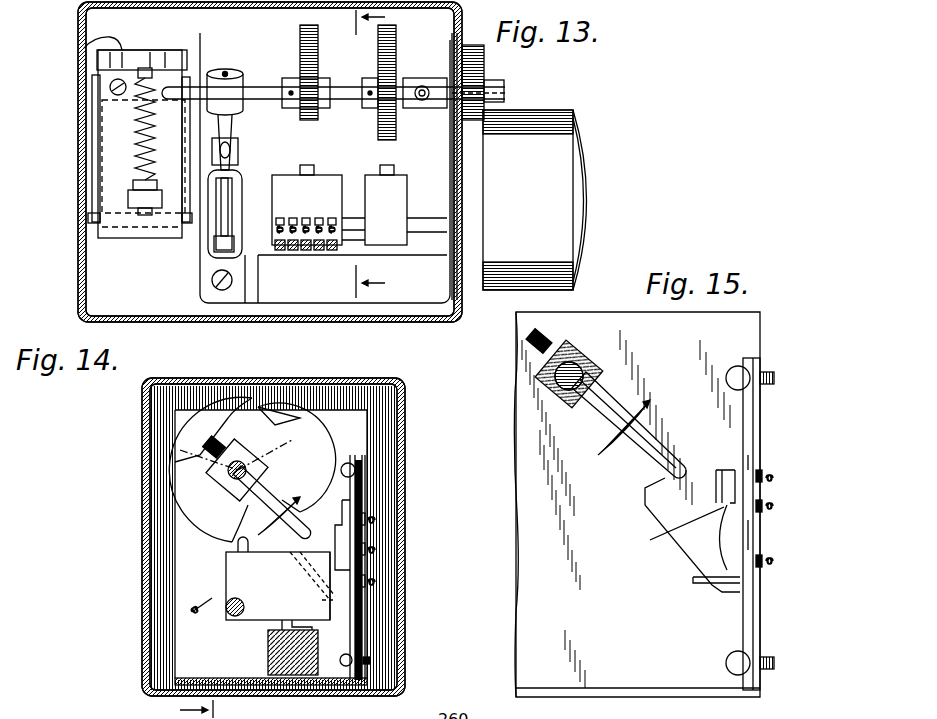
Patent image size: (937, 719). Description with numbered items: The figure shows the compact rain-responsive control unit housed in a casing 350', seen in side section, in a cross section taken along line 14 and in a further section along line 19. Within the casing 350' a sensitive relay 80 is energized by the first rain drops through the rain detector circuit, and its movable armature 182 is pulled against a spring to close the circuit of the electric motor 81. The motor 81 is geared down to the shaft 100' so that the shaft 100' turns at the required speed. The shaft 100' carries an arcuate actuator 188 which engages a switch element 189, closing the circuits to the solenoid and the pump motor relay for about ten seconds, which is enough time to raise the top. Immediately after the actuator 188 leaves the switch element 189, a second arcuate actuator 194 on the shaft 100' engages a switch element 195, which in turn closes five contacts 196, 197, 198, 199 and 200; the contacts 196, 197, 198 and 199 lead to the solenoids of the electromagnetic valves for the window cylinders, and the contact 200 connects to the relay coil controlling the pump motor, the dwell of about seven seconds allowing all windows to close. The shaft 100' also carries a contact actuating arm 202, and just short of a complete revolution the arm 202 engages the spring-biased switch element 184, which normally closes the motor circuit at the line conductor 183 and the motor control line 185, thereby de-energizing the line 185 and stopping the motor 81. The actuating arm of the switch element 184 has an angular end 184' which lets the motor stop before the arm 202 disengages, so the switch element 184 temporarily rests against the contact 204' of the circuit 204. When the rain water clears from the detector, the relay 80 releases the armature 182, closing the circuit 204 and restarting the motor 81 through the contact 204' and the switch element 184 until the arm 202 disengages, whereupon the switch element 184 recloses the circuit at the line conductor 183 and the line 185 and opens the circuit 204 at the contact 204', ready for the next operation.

In FIG. 13, the casing 350' is at (270, 177).
In FIG. 13, the sensitive relay 80 is at (95, 137).
In FIG. 13, the movable armature 182 is at (84, 50).
In FIG. 13, the contact actuating arm 202 is at (238, 118).
In FIG. 14, the contact actuating arm 202 is at (272, 510).
In FIG. 15, the contact actuating arm 202 is at (604, 414).
In FIG. 13, the switch element 184 is at (205, 220).
In FIG. 14, the switch element 184 is at (280, 520).
In FIG. 15, the switch element 184 is at (680, 548).
In FIG. 15, the angular end 184' is at (638, 489).
In FIG. 13, the arcuate actuator 194 is at (300, 36).
In FIG. 14, the arcuate actuator 194 is at (300, 436).
In FIG. 13, the arcuate actuator 188 is at (397, 30).
In FIG. 14, the arcuate actuator 188 is at (175, 462).
In FIG. 13, the shaft 100' is at (425, 76).
In FIG. 14, the shaft 100' is at (249, 468).
In FIG. 15, the shaft 100' is at (571, 364).
In FIG. 13, the section line 14 is at (356, 154).
In FIG. 13, the electric motor 81 is at (540, 190).
In FIG. 13, the switch element 195 is at (325, 170).
In FIG. 14, the switch element 195 is at (278, 593).
In FIG. 13, the contact 198 is at (313, 212).
In FIG. 13, the contact 200 is at (276, 220).
In FIG. 13, the contact 199 is at (293, 216).
In FIG. 13, the contact 197 is at (320, 216).
In FIG. 13, the contact 196 is at (336, 220).
In FIG. 14, the contact 196 is at (215, 610).
In FIG. 13, the switch element 189 is at (388, 182).
In FIG. 14, the circuit 204 is at (401, 509).
In FIG. 15, the circuit 204 is at (784, 472).
In FIG. 15, the contact 204' is at (706, 489).
In FIG. 14, the line conductor 183 is at (382, 551).
In FIG. 15, the line conductor 183 is at (782, 508).
In FIG. 14, the line 185 is at (382, 584).
In FIG. 15, the line 185 is at (782, 566).
In FIG. 14, the section line 19 is at (209, 709).